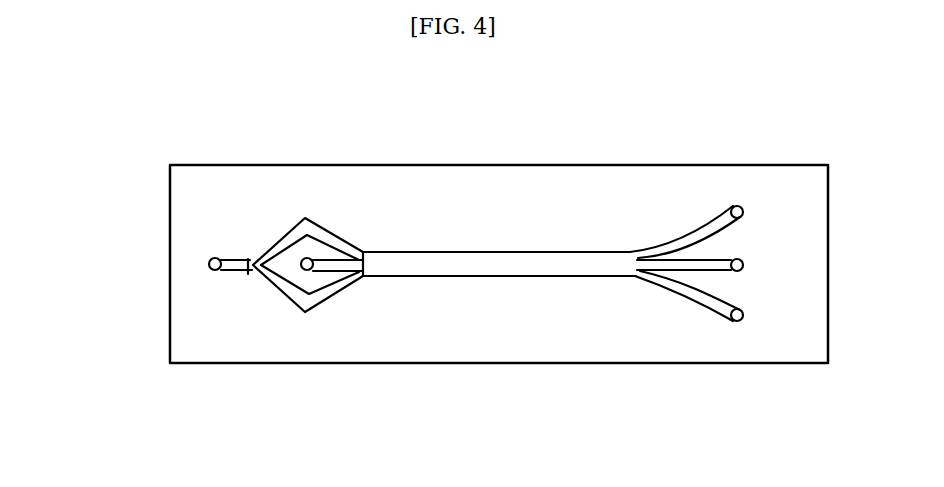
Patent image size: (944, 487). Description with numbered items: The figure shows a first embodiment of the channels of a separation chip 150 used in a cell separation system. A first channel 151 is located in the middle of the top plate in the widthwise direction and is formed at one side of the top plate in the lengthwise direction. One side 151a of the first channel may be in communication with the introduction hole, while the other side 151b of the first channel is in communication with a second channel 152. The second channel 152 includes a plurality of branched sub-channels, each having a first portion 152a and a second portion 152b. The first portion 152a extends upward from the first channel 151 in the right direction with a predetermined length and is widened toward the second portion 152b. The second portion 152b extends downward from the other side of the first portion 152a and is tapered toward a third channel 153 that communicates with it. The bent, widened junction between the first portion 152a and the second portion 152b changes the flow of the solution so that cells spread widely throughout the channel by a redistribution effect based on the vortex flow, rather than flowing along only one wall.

The microfluidic chip 150 is at (521, 220).
The first channel 151 is at (186, 284).
The one side of the first channel 151a is at (210, 273).
The other side of the first channel 151b is at (248, 274).
The second channel 152 is at (302, 188).
The first portion of the branched sub-channel 152a is at (265, 237).
The second portion of the branched sub-channel 152b is at (340, 240).
The third channel 153 is at (488, 263).